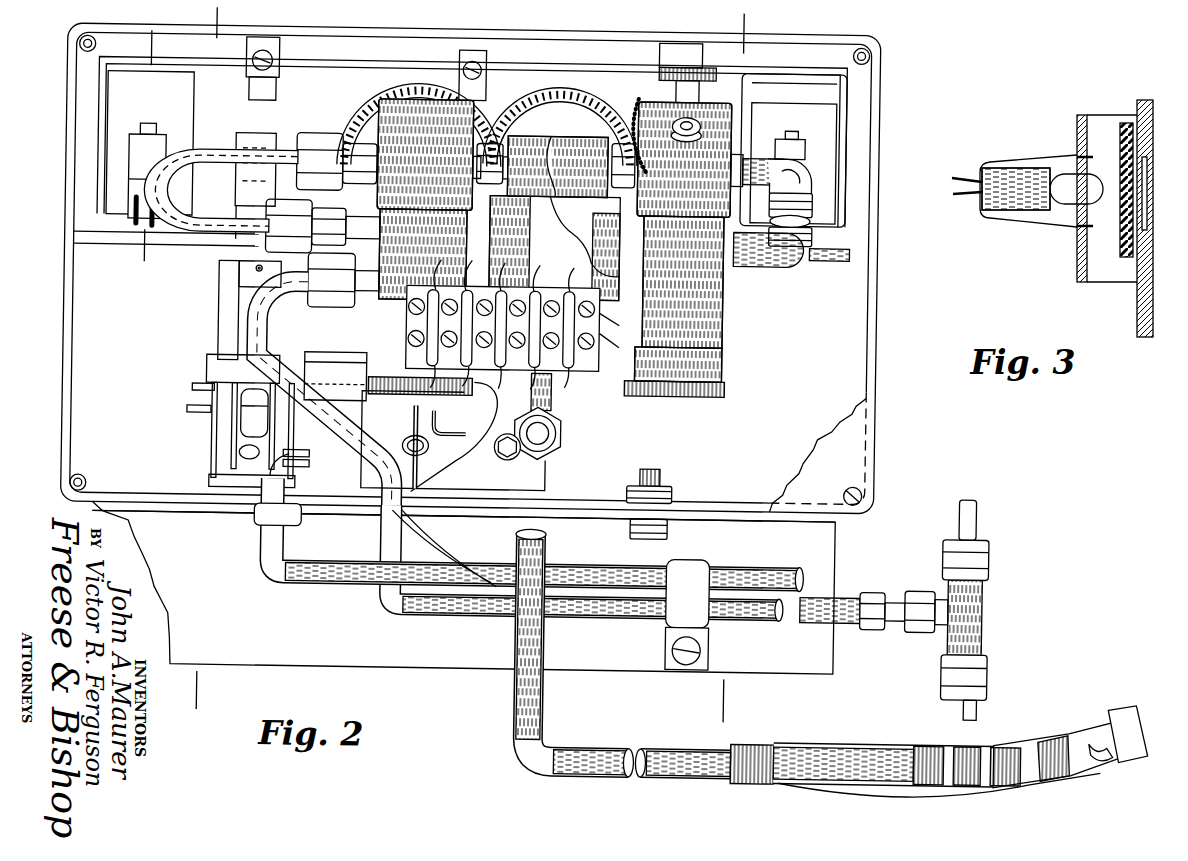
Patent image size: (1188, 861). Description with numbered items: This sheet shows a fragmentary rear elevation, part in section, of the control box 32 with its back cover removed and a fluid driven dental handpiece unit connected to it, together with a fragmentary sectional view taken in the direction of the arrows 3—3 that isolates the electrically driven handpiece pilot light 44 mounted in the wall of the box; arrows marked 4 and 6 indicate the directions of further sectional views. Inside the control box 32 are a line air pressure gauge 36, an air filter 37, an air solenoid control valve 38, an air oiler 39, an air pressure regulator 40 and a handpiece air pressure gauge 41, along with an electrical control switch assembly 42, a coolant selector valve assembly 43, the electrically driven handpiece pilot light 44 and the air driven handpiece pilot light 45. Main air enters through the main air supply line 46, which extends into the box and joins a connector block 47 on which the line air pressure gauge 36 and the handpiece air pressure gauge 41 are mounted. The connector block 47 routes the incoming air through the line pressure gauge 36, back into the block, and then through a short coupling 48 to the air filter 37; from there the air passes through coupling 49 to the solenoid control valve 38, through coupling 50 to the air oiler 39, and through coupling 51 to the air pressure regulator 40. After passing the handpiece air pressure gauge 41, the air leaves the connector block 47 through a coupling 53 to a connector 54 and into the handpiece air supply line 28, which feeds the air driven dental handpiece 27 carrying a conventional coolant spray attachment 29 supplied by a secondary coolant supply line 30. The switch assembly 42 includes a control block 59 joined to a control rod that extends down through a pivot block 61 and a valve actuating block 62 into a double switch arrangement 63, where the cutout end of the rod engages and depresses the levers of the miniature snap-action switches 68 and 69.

In FIG. 2, the section line 3— 3 is at (137, 41).
In FIG. 2, the section line 4— 4 is at (719, 24).
In FIG. 2, the section line 6— 6 is at (236, 11).
In FIG. 2, the air driven dental handpiece 27 is at (850, 734).
In FIG. 2, the handpiece air supply line 28 is at (546, 717).
In FIG. 2, the coolant spray attachment 29 is at (1122, 745).
In FIG. 2, the secondary coolant supply line 30 is at (523, 708).
In FIG. 2, the control box 32 is at (886, 289).
In FIG. 2, the line air pressure gauge 36 is at (347, 106).
In FIG. 2, the air filter 37 is at (394, 108).
In FIG. 2, the air solenoid control valve 38 is at (603, 289).
In FIG. 2, the air oiler 39 is at (720, 312).
In FIG. 2, the air pressure regulator 40 is at (755, 214).
In FIG. 2, the handpiece air pressure gauge 41 is at (568, 92).
In FIG. 2, the electrical control switch assembly 42 is at (205, 328).
In FIG. 2, the coolant selector valve assembly 43 is at (346, 338).
In FIG. 2, the electrically driven handpiece pilot light 44 is at (107, 121).
In FIG. 3, the electrically driven handpiece pilot light 44 is at (1073, 273).
In FIG. 2, the air driven handpiece pilot light 45 is at (838, 108).
In FIG. 2, the main air supply line 46 is at (431, 602).
In FIG. 2, the connector block 47 is at (323, 220).
In FIG. 2, the short coupling 48 is at (226, 150).
In FIG. 2, the coupling 49 is at (485, 150).
In FIG. 2, the coupling 50 is at (597, 162).
In FIG. 2, the coupling 51 is at (796, 246).
In FIG. 2, the coupling 53 is at (557, 388).
In FIG. 2, the connector 54 is at (562, 433).
In FIG. 2, the control block 59 is at (257, 198).
In FIG. 2, the pivot block 61 is at (254, 268).
In FIG. 2, the valve actuating block 62 is at (220, 367).
In FIG. 2, the double switch arrangement 63 is at (207, 425).
In FIG. 2, the snap-action switch 68 is at (235, 425).
In FIG. 2, the snap-action switch 69 is at (295, 419).